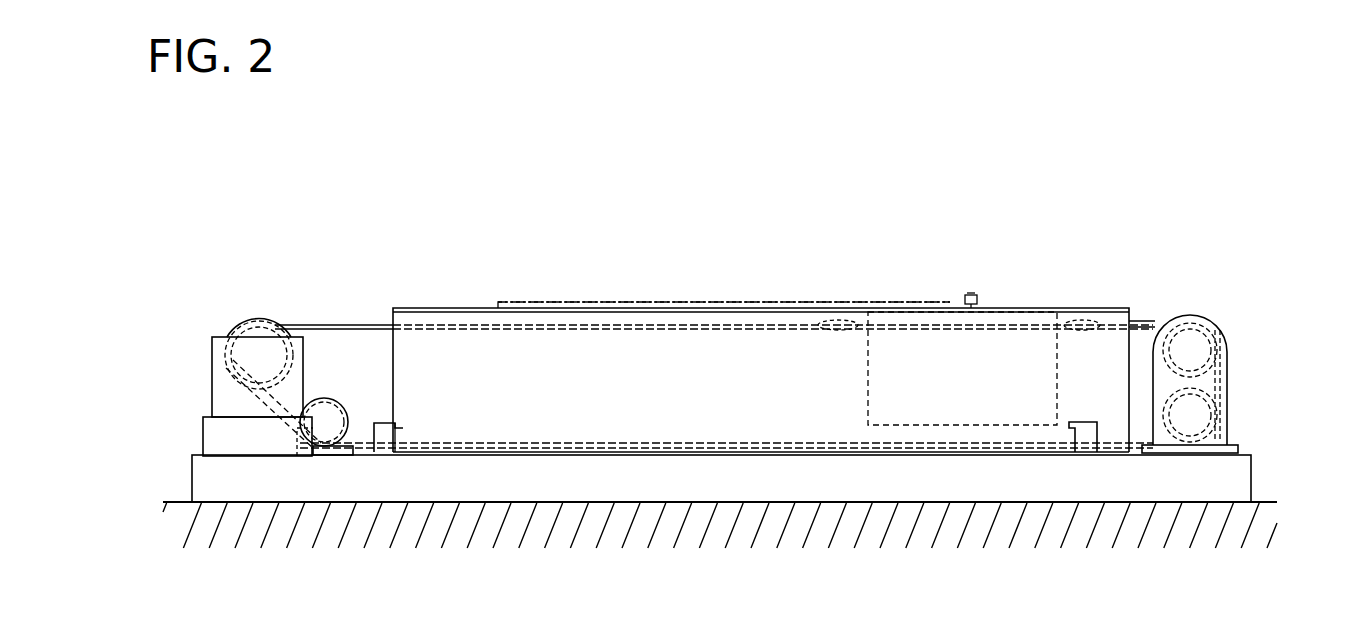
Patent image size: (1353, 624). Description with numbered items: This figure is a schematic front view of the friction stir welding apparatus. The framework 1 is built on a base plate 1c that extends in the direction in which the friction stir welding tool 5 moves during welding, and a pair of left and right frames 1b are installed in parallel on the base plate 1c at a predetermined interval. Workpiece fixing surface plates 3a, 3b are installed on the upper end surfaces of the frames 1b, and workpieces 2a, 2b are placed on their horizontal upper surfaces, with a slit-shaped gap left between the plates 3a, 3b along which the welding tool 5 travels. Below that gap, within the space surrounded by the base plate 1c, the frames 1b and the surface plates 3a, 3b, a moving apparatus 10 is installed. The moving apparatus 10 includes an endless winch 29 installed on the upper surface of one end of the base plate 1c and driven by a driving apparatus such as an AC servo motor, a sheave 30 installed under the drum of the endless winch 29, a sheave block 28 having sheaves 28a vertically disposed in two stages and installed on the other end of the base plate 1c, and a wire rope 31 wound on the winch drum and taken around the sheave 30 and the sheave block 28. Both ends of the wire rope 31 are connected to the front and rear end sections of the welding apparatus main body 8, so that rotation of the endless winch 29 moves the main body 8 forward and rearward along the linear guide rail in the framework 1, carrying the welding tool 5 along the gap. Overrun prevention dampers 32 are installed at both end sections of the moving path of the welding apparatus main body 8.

The framework 1 is at (725, 342).
The frame 1b is at (760, 322).
The base plate 1c is at (1237, 473).
The workpiece 2a is at (617, 302).
The workpiece 2b is at (724, 252).
The workpiece fixing surface plate 3a is at (477, 307).
The workpiece fixing surface plate 3b is at (709, 268).
The friction stir welding tool 5 is at (970, 295).
The welding apparatus main body 8 is at (1012, 325).
The moving apparatus 10 is at (350, 342).
The sheave block 28 is at (1231, 384).
The sheave 28a is at (1203, 345).
The endless winch 29 is at (237, 333).
The sheave 30 is at (341, 398).
The wire rope 31 is at (298, 325).
The welding apparatus main body overrun prevention damper 32 is at (380, 423).